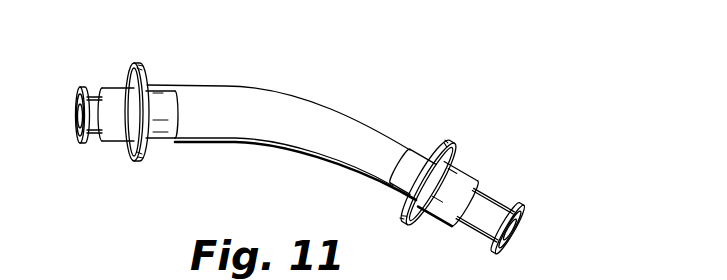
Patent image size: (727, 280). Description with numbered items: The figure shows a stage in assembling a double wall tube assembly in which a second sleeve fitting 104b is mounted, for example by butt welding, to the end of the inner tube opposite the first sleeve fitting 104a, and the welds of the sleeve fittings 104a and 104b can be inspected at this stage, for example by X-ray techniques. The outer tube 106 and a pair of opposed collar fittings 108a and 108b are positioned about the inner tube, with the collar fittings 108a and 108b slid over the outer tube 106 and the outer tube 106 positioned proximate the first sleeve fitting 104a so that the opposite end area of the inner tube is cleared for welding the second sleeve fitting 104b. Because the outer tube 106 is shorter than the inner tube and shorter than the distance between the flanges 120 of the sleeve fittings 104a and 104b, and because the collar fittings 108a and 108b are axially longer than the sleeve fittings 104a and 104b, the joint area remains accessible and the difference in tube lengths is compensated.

The first sleeve fitting 104a is at (78, 90).
The collar fitting 108a is at (137, 65).
The outer tube 106 is at (313, 92).
The collar fitting 108b is at (451, 141).
The second sleeve fitting 104b is at (525, 218).
The flange 120 is at (77, 139).